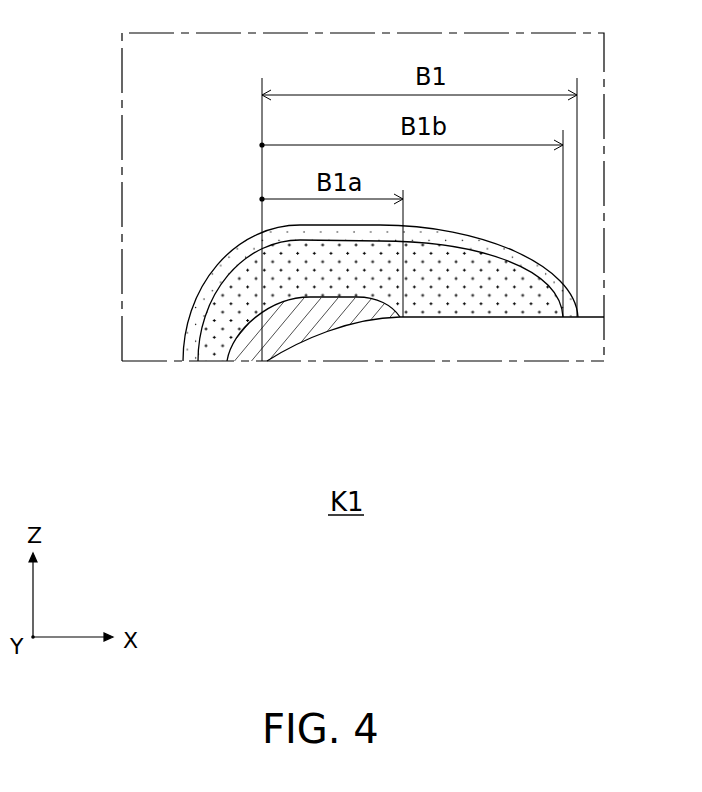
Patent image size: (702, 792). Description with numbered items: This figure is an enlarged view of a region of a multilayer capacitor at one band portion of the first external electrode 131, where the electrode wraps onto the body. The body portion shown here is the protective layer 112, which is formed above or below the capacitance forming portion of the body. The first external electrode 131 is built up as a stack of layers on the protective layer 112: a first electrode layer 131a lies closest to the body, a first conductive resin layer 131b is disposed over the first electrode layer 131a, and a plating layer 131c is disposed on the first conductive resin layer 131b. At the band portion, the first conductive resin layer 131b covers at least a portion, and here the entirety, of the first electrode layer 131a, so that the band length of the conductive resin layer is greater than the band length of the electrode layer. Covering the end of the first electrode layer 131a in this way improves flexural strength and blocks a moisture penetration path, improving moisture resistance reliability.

The protective layer 112 is at (470, 345).
The first external electrode 131 is at (343, 349).
The first electrode layer 131a is at (325, 368).
The first conductive resin layer 131b is at (213, 362).
The plating layer 131c is at (191, 363).